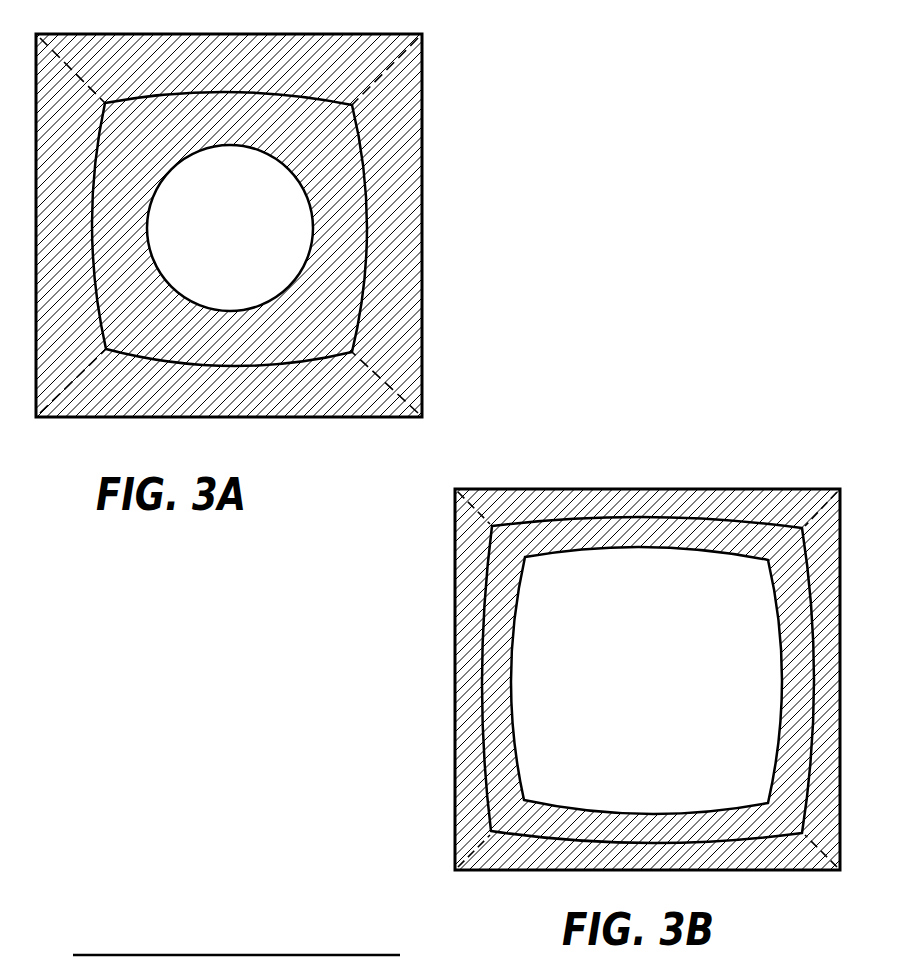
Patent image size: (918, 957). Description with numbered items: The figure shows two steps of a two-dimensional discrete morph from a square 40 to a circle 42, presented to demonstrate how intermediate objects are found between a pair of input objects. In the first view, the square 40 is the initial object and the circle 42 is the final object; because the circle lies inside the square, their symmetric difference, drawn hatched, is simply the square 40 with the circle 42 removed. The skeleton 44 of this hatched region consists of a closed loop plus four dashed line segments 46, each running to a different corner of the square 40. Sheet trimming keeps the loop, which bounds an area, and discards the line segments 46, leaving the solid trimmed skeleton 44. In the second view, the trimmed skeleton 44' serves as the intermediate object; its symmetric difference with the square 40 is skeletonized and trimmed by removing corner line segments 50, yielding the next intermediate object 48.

In FIG. 3A, the square 40 is at (422, 178).
In FIG. 3B, the square 40 is at (455, 593).
In FIG. 3A, the circle 42 is at (313, 232).
In FIG. 3A, the skeleton 44 is at (292, 229).
In FIG. 3B, the trimmed skeleton 44' is at (596, 680).
In FIG. 3A, the line segments 46 is at (68, 52).
In FIG. 3B, the intermediate object 48 is at (482, 748).
In FIG. 3B, the line segments 50 is at (470, 498).